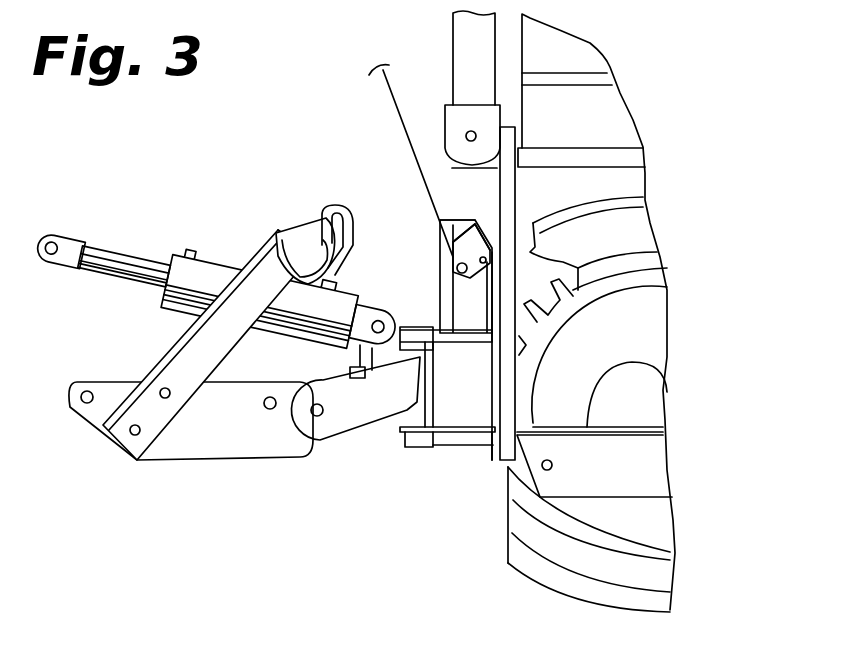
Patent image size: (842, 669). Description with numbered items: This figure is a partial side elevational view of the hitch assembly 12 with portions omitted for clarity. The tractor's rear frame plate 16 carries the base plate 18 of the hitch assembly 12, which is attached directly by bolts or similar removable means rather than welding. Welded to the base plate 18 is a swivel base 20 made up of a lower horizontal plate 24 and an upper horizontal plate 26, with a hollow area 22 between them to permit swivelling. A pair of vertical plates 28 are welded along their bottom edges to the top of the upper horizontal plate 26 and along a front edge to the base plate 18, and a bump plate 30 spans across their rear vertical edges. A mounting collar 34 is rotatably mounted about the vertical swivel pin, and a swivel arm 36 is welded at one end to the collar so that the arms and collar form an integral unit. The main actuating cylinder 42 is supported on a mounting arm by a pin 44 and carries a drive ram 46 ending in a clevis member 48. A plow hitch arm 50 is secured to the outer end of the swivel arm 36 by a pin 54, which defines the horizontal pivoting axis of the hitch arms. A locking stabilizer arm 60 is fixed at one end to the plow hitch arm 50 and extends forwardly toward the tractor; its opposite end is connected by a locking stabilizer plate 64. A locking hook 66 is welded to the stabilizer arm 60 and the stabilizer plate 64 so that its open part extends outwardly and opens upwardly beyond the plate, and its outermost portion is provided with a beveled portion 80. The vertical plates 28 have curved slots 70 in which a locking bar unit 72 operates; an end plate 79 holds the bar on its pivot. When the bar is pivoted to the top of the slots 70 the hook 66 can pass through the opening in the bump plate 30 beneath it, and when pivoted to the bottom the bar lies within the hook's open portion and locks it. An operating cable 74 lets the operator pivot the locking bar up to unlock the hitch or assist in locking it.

The hitch assembly 12 is at (190, 158).
The rear frame plate 16 is at (512, 182).
The base plate 18 is at (493, 447).
The swivel base 20 is at (470, 444).
The hollow area 22 is at (490, 373).
The lower horizontal plate 24 is at (427, 445).
The upper horizontal plate 26 is at (423, 330).
The vertical plates 28 is at (480, 310).
The bump plate 30 is at (440, 223).
The mounting collar 34 is at (400, 420).
The swivel arm 36 is at (370, 407).
The main actuating cylinder 42 is at (325, 310).
The pin 44 is at (378, 313).
The drive ram 46 is at (97, 245).
The clevis member 48 is at (58, 263).
The plow hitch arm 50 is at (238, 436).
The pin 54 is at (317, 437).
The locking stabilizer arm 60 is at (213, 365).
The locking stabilizer plate 64 is at (277, 233).
The locking hook 66 is at (368, 218).
The curved slots 70 is at (470, 238).
The locking bar unit 72 is at (457, 255).
The operating cable 74 is at (390, 105).
The end plate 79 is at (455, 262).
The beveled portion 80 is at (323, 217).